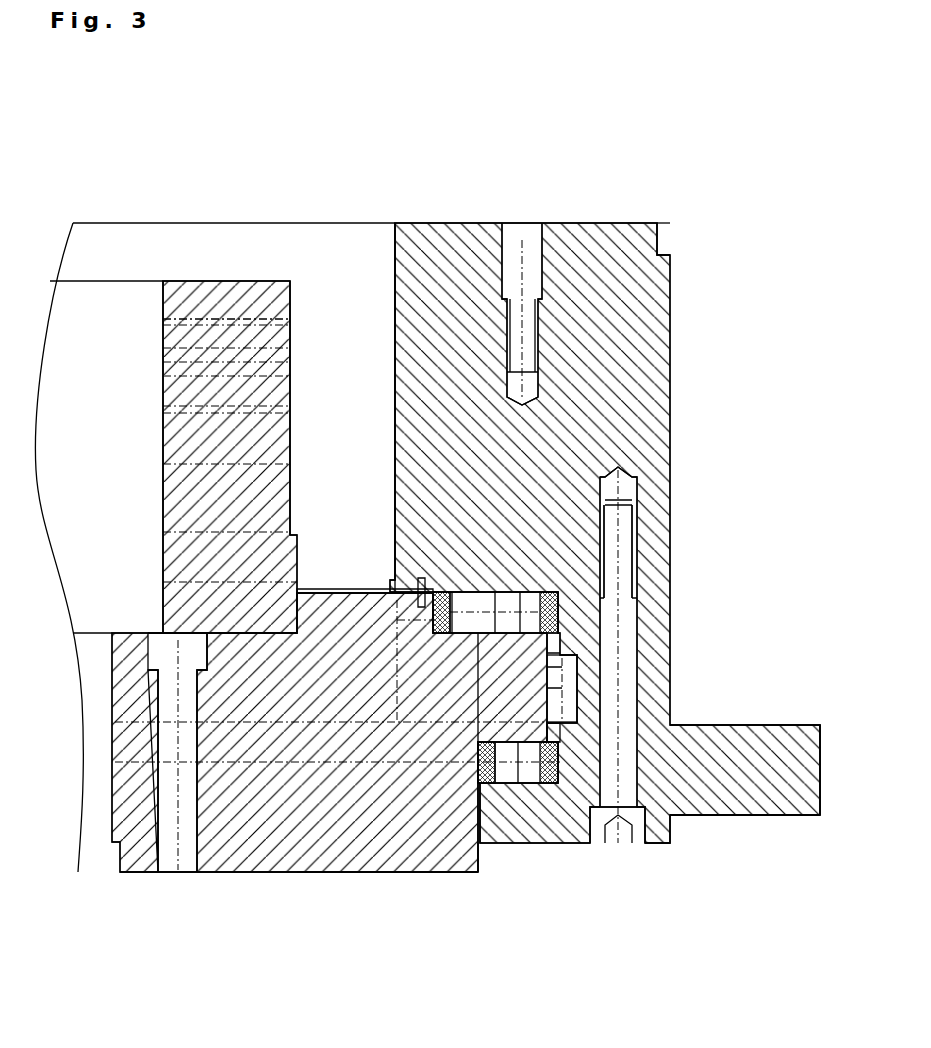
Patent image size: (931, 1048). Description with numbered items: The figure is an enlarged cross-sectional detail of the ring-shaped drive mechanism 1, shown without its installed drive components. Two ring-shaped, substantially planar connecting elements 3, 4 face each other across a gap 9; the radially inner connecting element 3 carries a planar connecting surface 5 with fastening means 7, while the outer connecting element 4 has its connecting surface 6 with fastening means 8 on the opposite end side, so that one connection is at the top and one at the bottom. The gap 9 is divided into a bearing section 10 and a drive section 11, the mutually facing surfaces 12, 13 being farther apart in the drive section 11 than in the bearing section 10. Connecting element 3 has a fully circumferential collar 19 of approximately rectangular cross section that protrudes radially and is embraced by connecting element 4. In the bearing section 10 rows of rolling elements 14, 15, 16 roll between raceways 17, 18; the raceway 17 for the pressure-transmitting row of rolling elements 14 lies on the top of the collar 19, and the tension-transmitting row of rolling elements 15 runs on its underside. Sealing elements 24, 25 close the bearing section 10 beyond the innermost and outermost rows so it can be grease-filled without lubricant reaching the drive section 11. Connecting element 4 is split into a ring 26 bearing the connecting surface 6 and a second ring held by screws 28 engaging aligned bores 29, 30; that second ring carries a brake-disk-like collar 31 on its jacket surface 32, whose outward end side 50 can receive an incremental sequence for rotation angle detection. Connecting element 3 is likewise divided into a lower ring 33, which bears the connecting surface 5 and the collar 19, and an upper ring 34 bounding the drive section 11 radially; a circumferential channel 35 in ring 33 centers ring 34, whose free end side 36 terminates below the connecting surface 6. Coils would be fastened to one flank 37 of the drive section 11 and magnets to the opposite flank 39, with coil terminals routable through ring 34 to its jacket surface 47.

The drive mechanism 1 is at (705, 104).
The connecting element 3 is at (297, 833).
The connecting element 4 is at (642, 317).
The connecting surface 5 is at (370, 874).
The connecting surface 6 is at (447, 240).
The fastening means 7 is at (178, 848).
The fastening means 8 is at (522, 242).
The gap 9 is at (473, 822).
The bearing section 10 is at (560, 643).
The drive section 11 is at (180, 237).
The mutually facing surface 12 is at (567, 725).
The mutually facing surface 13 is at (660, 668).
The rolling elements 14 is at (507, 602).
The rolling elements 15 is at (508, 770).
The rolling elements 16 is at (556, 690).
The raceway 17 is at (507, 738).
The raceway 18 is at (495, 585).
The collar 19 is at (440, 688).
The sealing element 24 is at (466, 849).
The sealing element 25 is at (421, 578).
The ring 26 is at (608, 262).
The screws 28 is at (623, 848).
The bores 29 is at (638, 577).
The bores 30 is at (640, 753).
The collar 31 is at (777, 797).
The jacket surface 32 is at (672, 827).
The ring 33 is at (297, 833).
The ring 34 is at (175, 437).
The channel 35 is at (320, 589).
The free end side 36 is at (250, 297).
The flank 37 is at (318, 297).
The flank 39 is at (385, 300).
The jacket surface 47 is at (163, 337).
The end side 50 is at (820, 772).